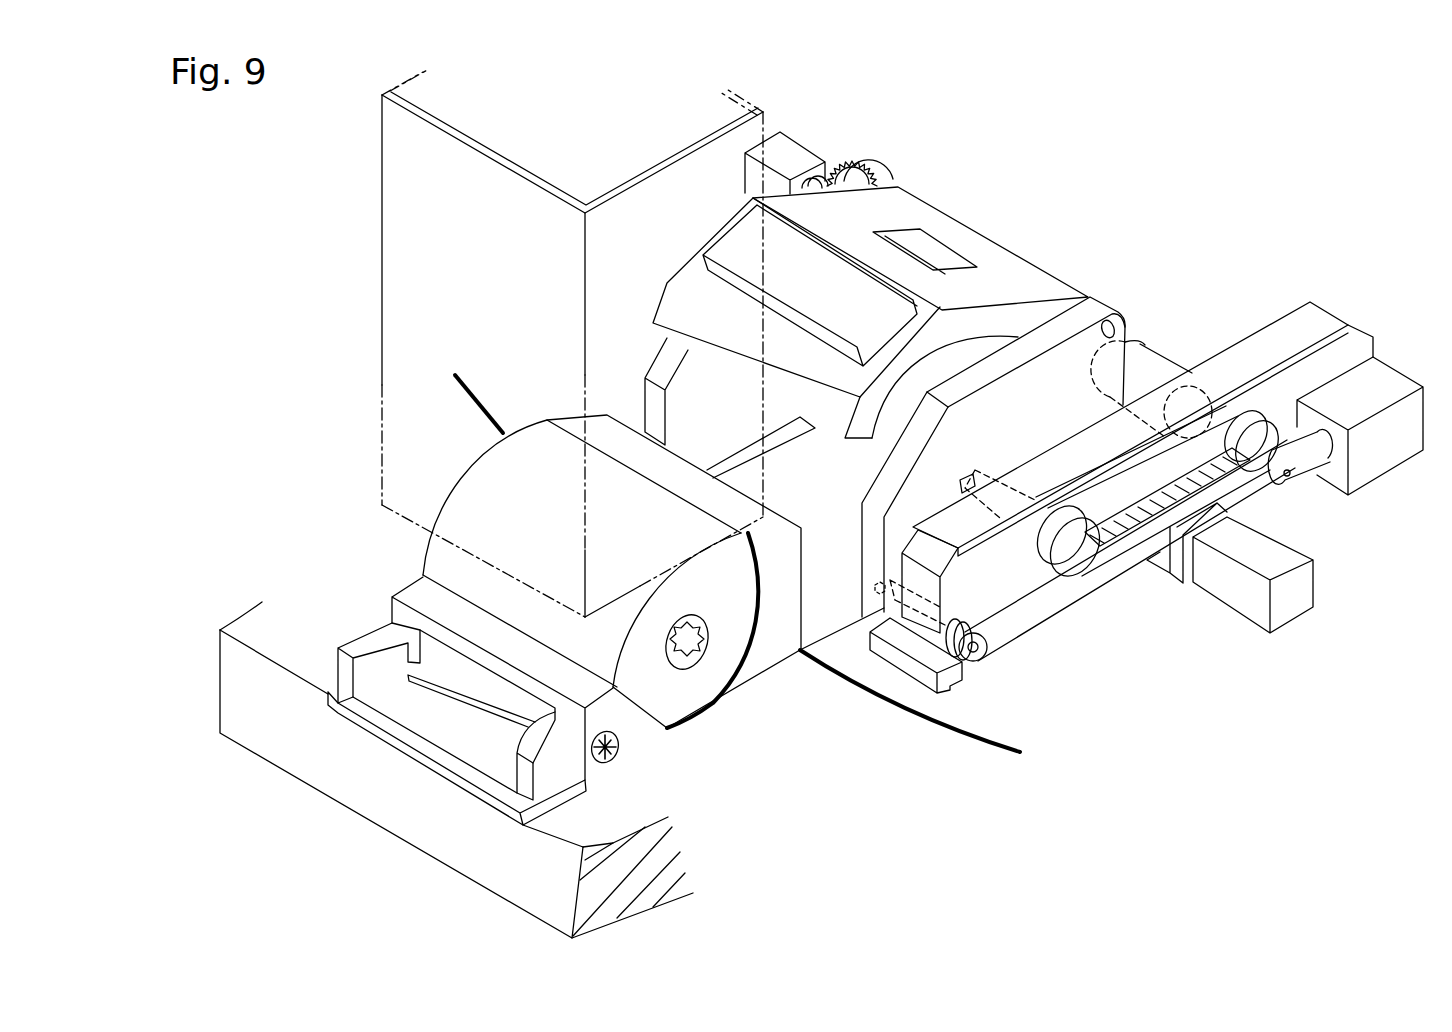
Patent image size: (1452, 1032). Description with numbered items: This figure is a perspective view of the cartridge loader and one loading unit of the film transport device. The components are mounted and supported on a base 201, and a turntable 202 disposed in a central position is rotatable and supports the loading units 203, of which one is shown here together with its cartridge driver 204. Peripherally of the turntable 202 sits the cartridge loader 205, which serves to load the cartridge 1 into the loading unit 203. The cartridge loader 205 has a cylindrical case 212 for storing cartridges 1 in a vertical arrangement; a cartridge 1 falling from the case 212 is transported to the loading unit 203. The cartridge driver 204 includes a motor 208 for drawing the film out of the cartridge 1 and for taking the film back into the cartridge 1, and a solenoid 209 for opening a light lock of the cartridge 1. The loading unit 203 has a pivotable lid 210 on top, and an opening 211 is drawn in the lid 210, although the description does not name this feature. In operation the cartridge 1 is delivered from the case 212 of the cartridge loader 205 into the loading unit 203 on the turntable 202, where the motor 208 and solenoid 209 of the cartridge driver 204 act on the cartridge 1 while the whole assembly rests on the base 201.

The cartridge 1 is at (473, 493).
The base 201 is at (477, 865).
The turntable 202 is at (1000, 728).
The loading unit 203 is at (1072, 263).
The cartridge driver 204 is at (1222, 300).
The cartridge loader 205 is at (758, 707).
The motor 208 is at (1140, 347).
The solenoid 209 is at (1395, 478).
The pivotable lid 210 is at (973, 233).
The slot 211 is at (905, 236).
The cylindrical case 212 is at (382, 180).